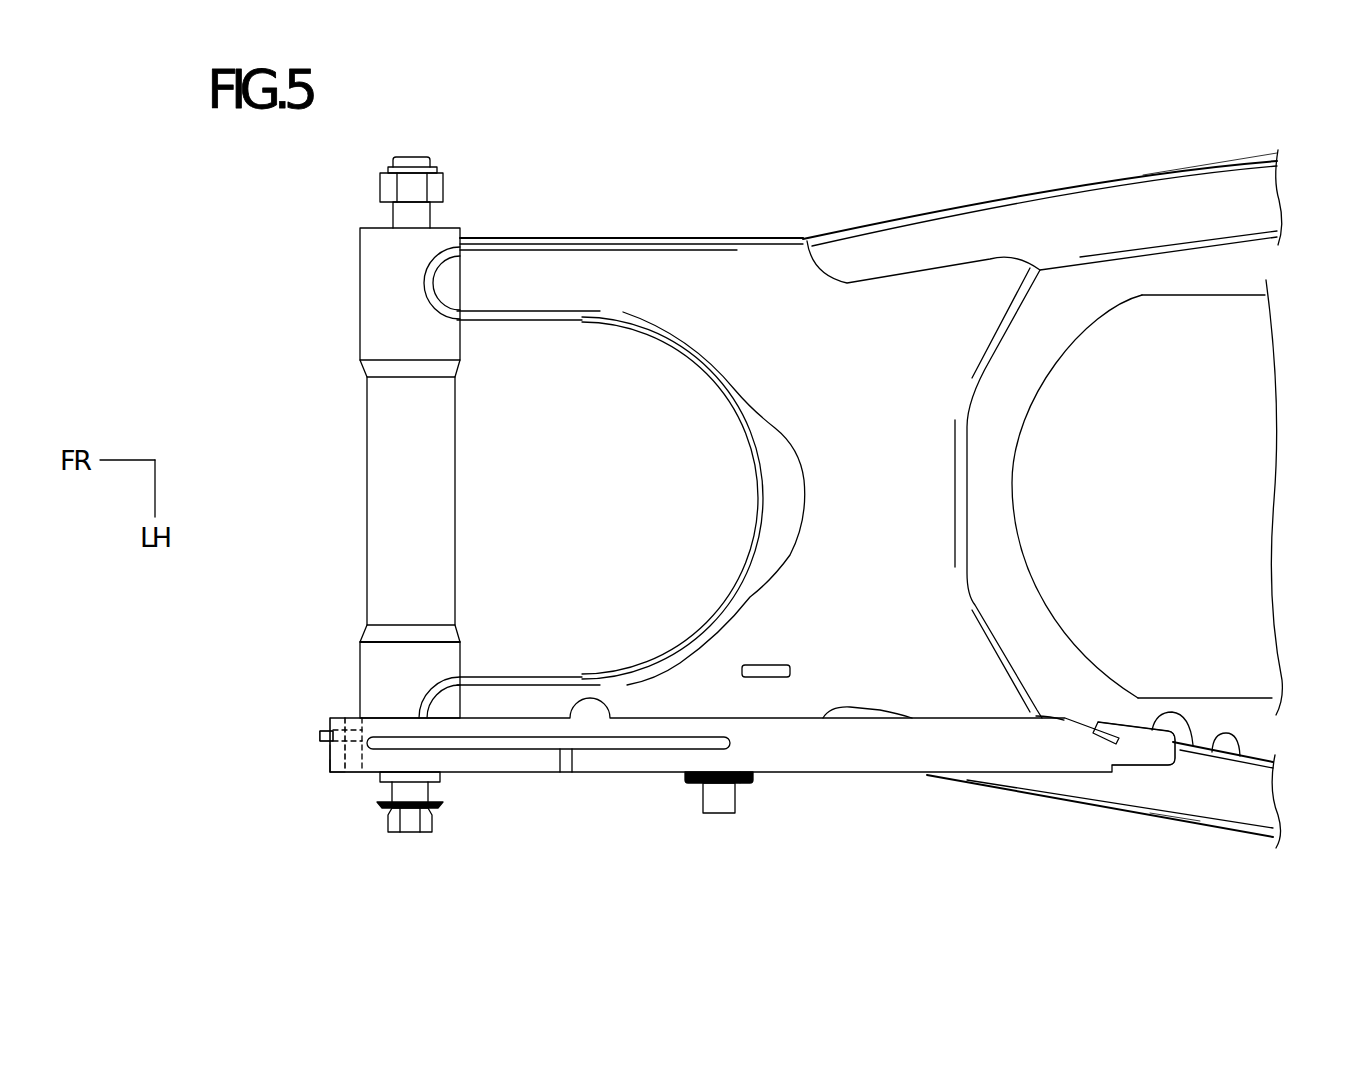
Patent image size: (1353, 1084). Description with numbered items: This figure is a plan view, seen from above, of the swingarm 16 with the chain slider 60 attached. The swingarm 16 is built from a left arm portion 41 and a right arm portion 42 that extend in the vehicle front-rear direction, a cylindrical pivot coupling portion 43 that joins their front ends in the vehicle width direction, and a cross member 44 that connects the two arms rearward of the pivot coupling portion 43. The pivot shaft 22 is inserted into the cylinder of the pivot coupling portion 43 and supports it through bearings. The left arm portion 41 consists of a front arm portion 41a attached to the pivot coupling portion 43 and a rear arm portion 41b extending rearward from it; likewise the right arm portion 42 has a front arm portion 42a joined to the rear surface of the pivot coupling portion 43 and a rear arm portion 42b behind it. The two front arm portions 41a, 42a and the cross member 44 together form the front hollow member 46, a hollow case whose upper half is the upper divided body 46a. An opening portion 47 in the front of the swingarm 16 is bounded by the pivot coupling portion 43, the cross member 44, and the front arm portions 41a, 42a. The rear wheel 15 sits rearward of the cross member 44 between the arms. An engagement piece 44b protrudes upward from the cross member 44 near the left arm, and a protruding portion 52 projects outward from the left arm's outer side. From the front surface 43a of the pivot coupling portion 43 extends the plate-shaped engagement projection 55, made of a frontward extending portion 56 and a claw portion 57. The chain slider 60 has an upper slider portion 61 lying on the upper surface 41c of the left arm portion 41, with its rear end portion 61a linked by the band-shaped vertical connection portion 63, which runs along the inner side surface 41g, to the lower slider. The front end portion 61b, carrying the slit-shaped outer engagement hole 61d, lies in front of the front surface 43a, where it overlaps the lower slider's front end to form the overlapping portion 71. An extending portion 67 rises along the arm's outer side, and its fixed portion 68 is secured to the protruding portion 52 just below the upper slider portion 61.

The rear wheel 15 is at (1242, 368).
The swingarm 16 is at (523, 391).
The pivot shaft 22 is at (410, 834).
The left arm portion 41 is at (1014, 795).
The front arm portion 41a is at (515, 705).
The rear arm portion 41b is at (1168, 820).
The upper surface 41c is at (665, 698).
The inner side surface 41g is at (1240, 756).
The right arm portion 42 is at (1065, 190).
The front arm portion 42a is at (512, 240).
The rear arm portion 42b is at (1143, 175).
The pivot coupling portion 43 is at (357, 325).
The front surface 43a is at (357, 670).
The cross member 44 is at (967, 493).
The engagement piece 44b is at (765, 677).
The front hollow member 46 is at (672, 235).
The upper divided body 46a is at (713, 290).
The opening portion 47 is at (570, 400).
The protruding portion 52 is at (716, 817).
The engagement projection 55 is at (226, 650).
The frontward extending portion 56 is at (343, 717).
The claw portion 57 is at (324, 731).
The chain slider 60 is at (343, 777).
The upper slider portion 61 is at (660, 805).
The rear end portion 61a is at (1153, 758).
The front end portion 61b is at (325, 770).
The outer engagement hole 61d is at (326, 756).
The vertical connection portion 63 is at (1193, 745).
The extending portion 67 is at (694, 786).
The fixed portion 68 is at (742, 784).
The overlapping portion 71 is at (326, 764).